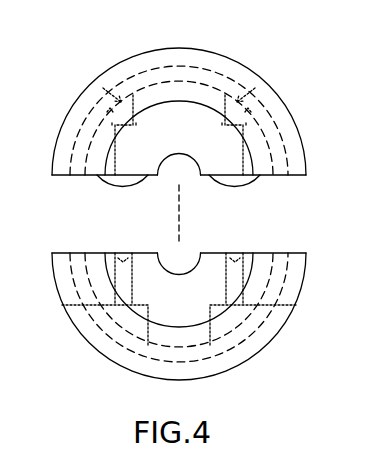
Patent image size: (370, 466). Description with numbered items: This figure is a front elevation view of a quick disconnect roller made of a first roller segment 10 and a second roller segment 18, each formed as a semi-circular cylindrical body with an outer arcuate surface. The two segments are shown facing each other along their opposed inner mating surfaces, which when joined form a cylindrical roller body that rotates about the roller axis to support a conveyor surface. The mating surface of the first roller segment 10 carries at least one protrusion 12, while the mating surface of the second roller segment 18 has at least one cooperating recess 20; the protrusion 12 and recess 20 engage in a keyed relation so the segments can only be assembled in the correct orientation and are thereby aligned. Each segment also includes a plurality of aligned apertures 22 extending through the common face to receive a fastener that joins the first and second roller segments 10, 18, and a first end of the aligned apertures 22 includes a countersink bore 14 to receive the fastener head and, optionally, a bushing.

The first roller segment 10 is at (173, 48).
The protrusion 12 is at (122, 188).
The countersink bore 14 is at (100, 72).
The second roller segment 18 is at (130, 373).
The recess 20 is at (123, 262).
The aligned apertures 22 is at (65, 308).